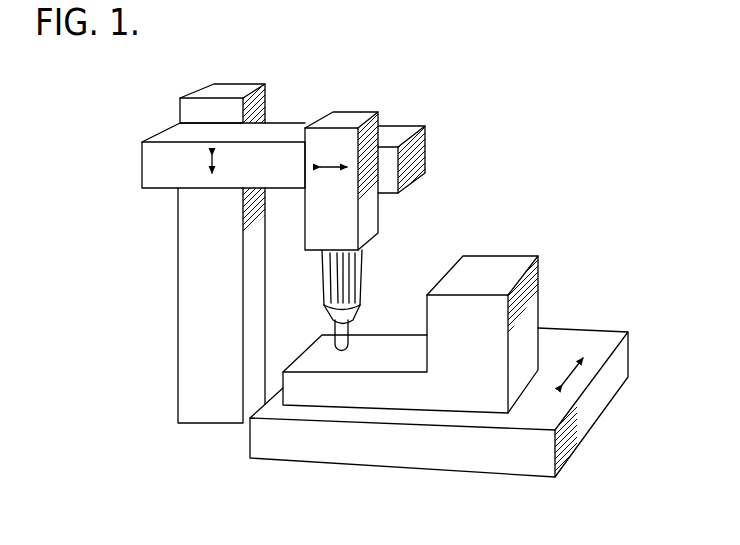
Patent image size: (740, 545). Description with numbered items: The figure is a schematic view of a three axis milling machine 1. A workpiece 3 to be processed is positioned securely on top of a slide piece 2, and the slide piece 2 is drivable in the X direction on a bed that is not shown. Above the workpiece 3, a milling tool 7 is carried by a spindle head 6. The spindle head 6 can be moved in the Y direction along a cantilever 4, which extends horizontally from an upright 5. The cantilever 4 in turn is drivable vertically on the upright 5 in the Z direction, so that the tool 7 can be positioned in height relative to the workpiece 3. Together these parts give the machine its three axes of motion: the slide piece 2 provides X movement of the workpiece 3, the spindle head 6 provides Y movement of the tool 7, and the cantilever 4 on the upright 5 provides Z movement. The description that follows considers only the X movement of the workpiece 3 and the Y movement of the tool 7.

The three axis milling machine 1 is at (460, 203).
The slide piece 2 is at (454, 455).
The workpiece 3 is at (537, 279).
The cantilever 4 is at (157, 170).
The upright 5 is at (188, 304).
The spindle head 6 is at (353, 120).
The milling tool 7 is at (331, 337).